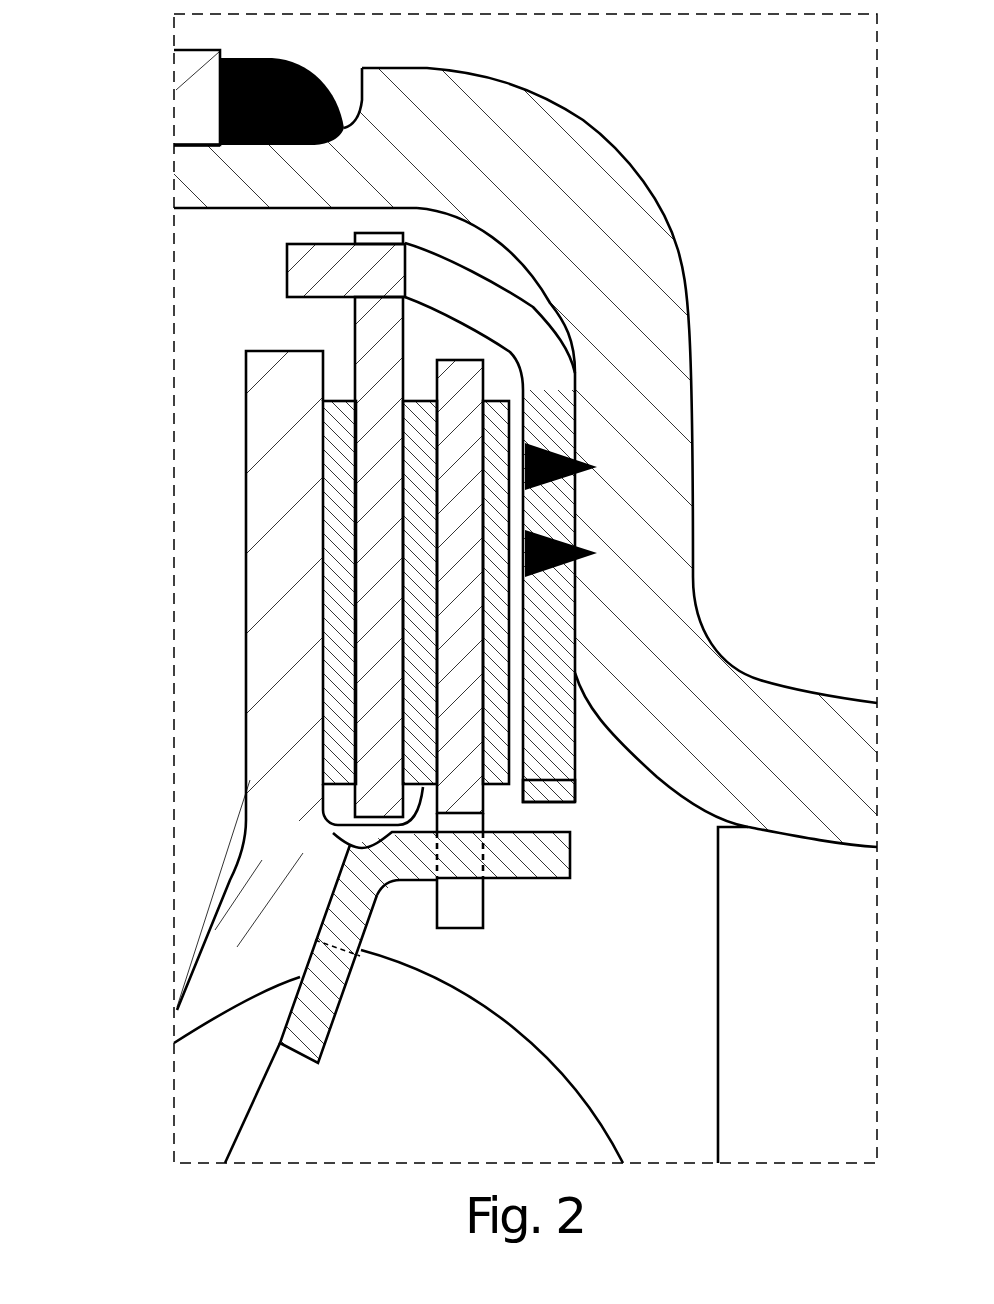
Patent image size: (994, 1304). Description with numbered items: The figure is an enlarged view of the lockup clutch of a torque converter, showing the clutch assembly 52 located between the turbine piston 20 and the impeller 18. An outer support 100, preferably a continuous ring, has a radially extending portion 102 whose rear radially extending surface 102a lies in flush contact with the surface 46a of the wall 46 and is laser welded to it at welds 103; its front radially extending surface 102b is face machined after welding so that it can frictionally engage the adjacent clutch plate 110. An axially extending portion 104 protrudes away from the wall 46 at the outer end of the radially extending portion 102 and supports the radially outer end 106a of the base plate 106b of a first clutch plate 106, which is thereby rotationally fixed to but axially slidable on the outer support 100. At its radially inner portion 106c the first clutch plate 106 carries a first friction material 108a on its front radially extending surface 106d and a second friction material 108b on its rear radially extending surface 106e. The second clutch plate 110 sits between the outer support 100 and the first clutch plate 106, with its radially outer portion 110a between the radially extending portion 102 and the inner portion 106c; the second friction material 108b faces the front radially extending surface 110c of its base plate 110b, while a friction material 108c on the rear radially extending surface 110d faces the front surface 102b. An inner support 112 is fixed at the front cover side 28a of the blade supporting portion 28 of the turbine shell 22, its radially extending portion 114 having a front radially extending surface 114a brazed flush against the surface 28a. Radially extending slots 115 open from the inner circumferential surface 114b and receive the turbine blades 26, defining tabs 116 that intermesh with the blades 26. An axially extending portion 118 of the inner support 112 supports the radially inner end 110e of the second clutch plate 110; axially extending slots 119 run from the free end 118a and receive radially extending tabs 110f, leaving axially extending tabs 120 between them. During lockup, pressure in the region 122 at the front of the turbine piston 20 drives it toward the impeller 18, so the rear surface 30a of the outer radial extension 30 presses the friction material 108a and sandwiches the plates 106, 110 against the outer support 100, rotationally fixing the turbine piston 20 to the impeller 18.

The impeller 18 is at (824, 686).
The turbine piston 20 is at (212, 347).
The turbine shell 22 is at (213, 1000).
The turbine blades 26 is at (483, 1149).
The blade supporting portion 28 is at (143, 807).
The front cover side 28a is at (174, 1043).
The outer radial extension 30 is at (278, 427).
The rear surface of outer radial extension 30a is at (323, 550).
The wall 46 is at (667, 465).
The surface of wall 46a is at (590, 657).
The clutch assembly 52 is at (260, 238).
The outer support 100 is at (558, 407).
The radially extending portion of outer support 102 is at (580, 633).
The rear radially extending surface 102a is at (577, 441).
The front radially extending surface 102b is at (523, 652).
The welds 103 is at (583, 547).
The axially extending portion of outer support 104 is at (443, 277).
The first clutch plate 106 is at (397, 218).
The radially outer end of first clutch plate 106a is at (332, 238).
The base plate of first clutch plate 106b is at (377, 367).
The radially inner portion of first clutch plate 106c is at (247, 617).
The front radially extending surface of base plate 106d is at (355, 460).
The rear radially extending surface of base plate 106e is at (403, 415).
The first friction material 108a is at (340, 497).
The second friction material 108b is at (323, 828).
The friction material 108c is at (550, 633).
The second clutch plate 110 is at (470, 350).
The radially outer portion of second clutch plate 110a is at (490, 700).
The base plate of second clutch plate 110b is at (460, 592).
The front radially extending surface of second clutch plate 110c is at (437, 652).
The rear radially extending surface of second clutch plate 110d is at (517, 727).
The radially inner end of second clutch plate 110e is at (492, 928).
The radially extending tabs 110f is at (470, 895).
The inner support 112 is at (327, 900).
The radially extending portion of inner support 114 is at (343, 1033).
The front radially extending surface of inner support 114a is at (288, 1020).
The inner circumferential surface 114b is at (288, 1052).
The radially extending slots 115 is at (337, 943).
The tabs 116 is at (313, 1013).
The axially extending portion of inner support 118 is at (587, 887).
The free end 118a is at (545, 850).
The axially extending slots 119 is at (540, 860).
The axially extending tabs 120 is at (513, 848).
The region 122 is at (322, 605).